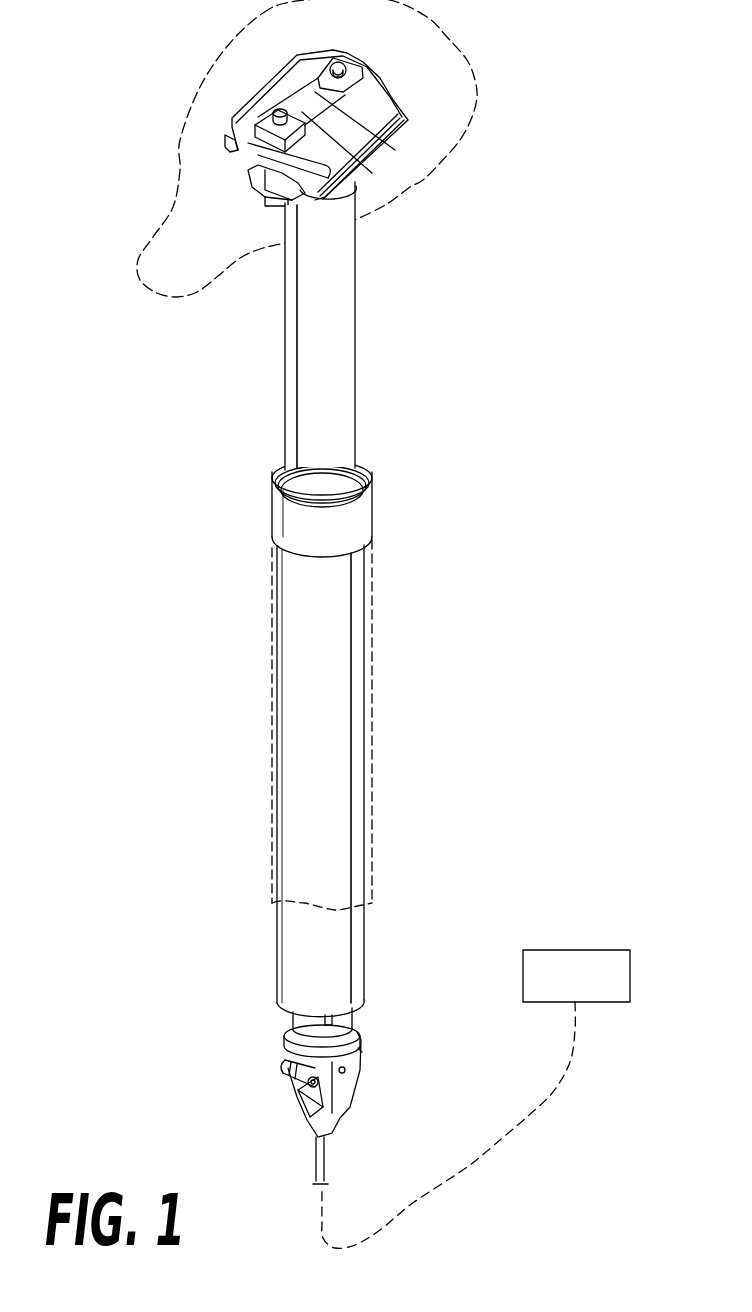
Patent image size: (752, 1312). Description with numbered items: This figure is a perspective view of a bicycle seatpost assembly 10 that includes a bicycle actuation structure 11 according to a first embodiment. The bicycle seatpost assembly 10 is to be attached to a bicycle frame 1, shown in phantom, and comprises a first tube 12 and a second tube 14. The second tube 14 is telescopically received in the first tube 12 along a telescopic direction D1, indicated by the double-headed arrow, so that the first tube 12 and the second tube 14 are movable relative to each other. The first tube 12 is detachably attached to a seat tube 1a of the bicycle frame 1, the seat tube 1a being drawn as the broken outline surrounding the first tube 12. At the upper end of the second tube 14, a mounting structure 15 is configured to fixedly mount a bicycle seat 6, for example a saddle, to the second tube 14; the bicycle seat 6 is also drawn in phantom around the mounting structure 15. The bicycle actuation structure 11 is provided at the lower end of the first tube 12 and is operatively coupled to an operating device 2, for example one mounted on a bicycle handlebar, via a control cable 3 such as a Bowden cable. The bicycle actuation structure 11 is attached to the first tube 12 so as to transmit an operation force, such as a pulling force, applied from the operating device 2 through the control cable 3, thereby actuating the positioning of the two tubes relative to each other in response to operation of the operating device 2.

The bicycle frame 1 is at (375, 662).
The seat tube 1a is at (372, 733).
The operating device 2 is at (583, 988).
The control cable 3 is at (501, 1134).
The bicycle seat 6 is at (476, 84).
The bicycle seatpost assembly 10 is at (467, 265).
The bicycle actuation structure 11 is at (277, 1078).
The first tube 12 is at (367, 952).
The second tube 14 is at (357, 330).
The mounting structure 15 is at (239, 97).
The telescopic direction D1 is at (590, 390).